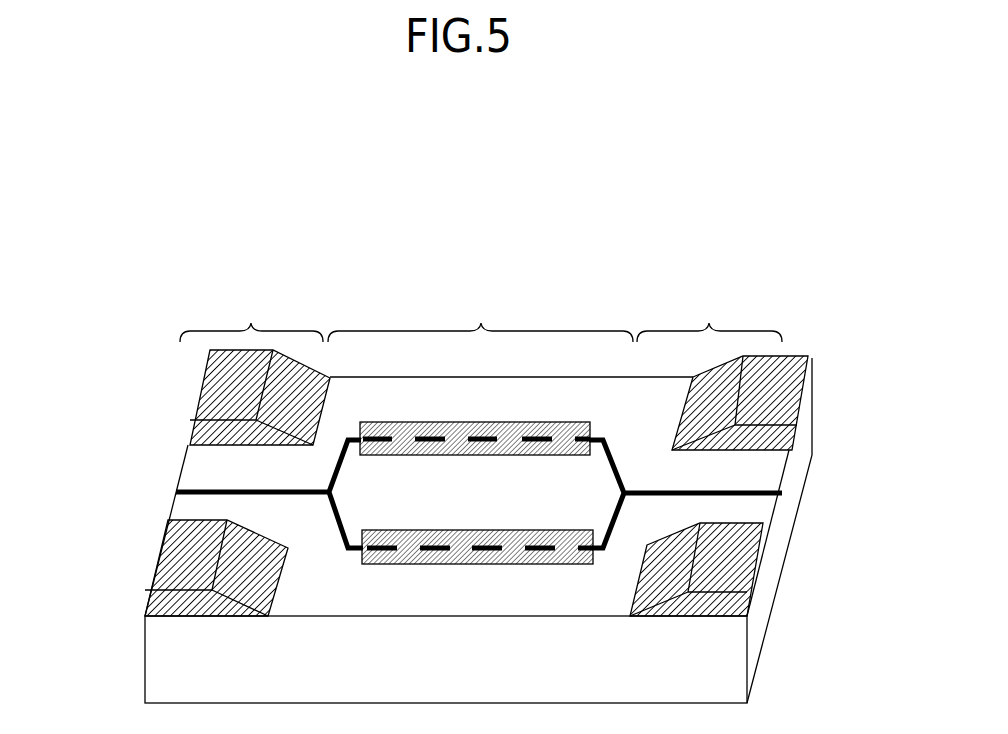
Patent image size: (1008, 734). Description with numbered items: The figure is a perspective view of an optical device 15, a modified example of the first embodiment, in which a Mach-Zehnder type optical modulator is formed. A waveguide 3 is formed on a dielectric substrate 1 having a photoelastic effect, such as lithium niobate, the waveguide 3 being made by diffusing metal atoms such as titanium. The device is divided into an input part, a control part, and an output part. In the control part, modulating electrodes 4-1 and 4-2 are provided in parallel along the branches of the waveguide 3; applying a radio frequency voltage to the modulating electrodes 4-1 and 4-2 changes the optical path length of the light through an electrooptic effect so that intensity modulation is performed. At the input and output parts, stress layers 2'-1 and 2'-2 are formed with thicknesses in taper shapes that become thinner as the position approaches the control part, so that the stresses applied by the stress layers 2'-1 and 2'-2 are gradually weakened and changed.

The optical modulator 15 is at (61, 182).
The dielectric substrate 1 is at (147, 673).
The stress layer 2'-1 is at (499, 398).
The stress layer 2'-2 is at (455, 568).
The waveguide 3 is at (177, 490).
The modulating electrode 4-1 is at (520, 422).
The modulating electrode 4-2 is at (520, 565).